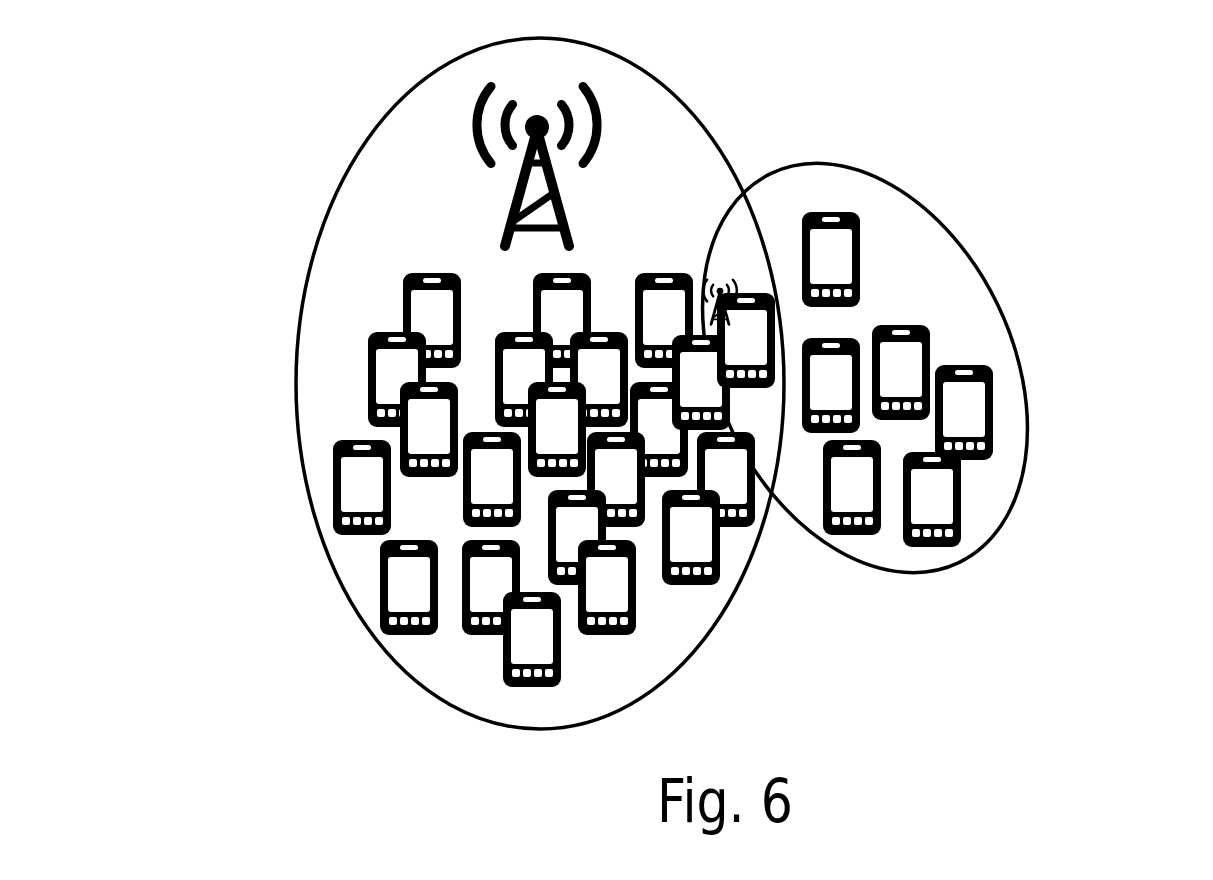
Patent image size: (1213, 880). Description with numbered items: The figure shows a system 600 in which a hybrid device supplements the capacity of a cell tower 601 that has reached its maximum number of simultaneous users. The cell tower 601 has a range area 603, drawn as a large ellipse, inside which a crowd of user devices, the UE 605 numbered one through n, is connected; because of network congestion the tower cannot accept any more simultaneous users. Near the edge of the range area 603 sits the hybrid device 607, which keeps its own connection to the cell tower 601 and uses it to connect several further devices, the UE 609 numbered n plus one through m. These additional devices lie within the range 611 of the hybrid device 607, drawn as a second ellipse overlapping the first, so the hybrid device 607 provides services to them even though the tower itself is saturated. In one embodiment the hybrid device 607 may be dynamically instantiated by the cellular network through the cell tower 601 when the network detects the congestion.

The system 600 is at (757, 67).
The cell tower 601 is at (562, 102).
The range area 603 is at (378, 124).
The user equipment (UE) 1-n 605 is at (347, 217).
The hybrid device 607 is at (727, 278).
The user equipment (UE) n+1-m 609 is at (992, 200).
The range of hybrid device 611 is at (923, 207).